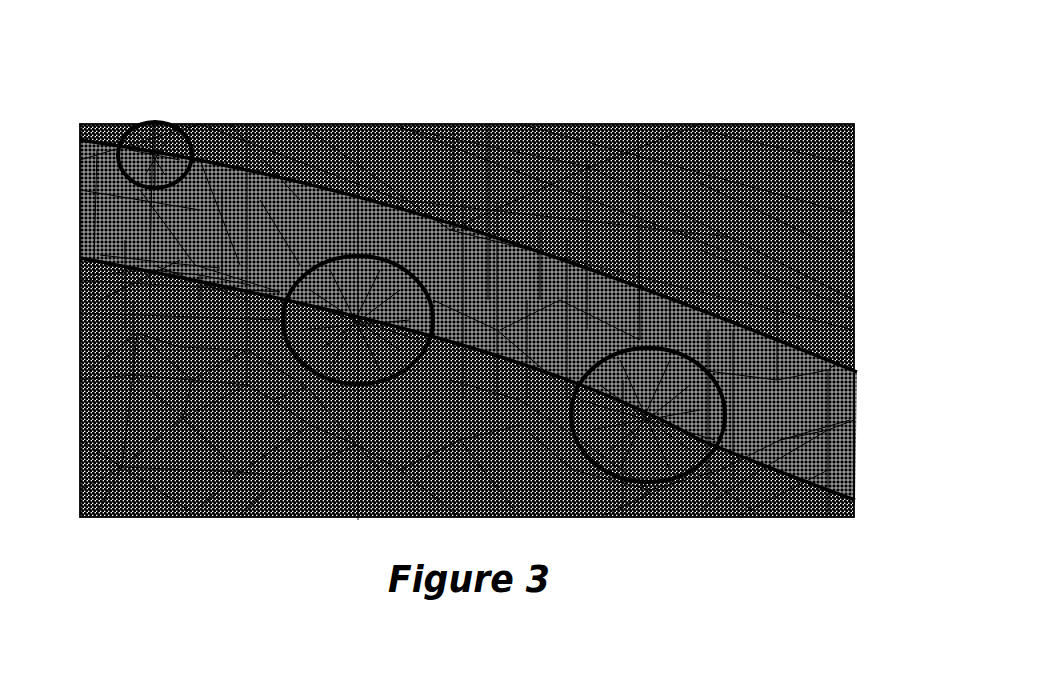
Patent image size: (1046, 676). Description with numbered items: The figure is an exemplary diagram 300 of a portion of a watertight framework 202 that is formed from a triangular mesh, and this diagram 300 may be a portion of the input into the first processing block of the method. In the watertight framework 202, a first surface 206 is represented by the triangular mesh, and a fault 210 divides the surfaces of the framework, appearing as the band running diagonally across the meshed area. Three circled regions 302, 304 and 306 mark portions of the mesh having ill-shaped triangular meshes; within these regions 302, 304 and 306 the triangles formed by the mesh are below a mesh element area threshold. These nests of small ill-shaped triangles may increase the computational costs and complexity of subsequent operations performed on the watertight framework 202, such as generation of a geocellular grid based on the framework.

The exemplary diagram 300 is at (124, 72).
The watertight framework 202 is at (163, 247).
The first surface 206 is at (822, 188).
The fault 210 is at (820, 450).
The region 302 is at (167, 122).
The region 304 is at (389, 257).
The region 306 is at (710, 375).